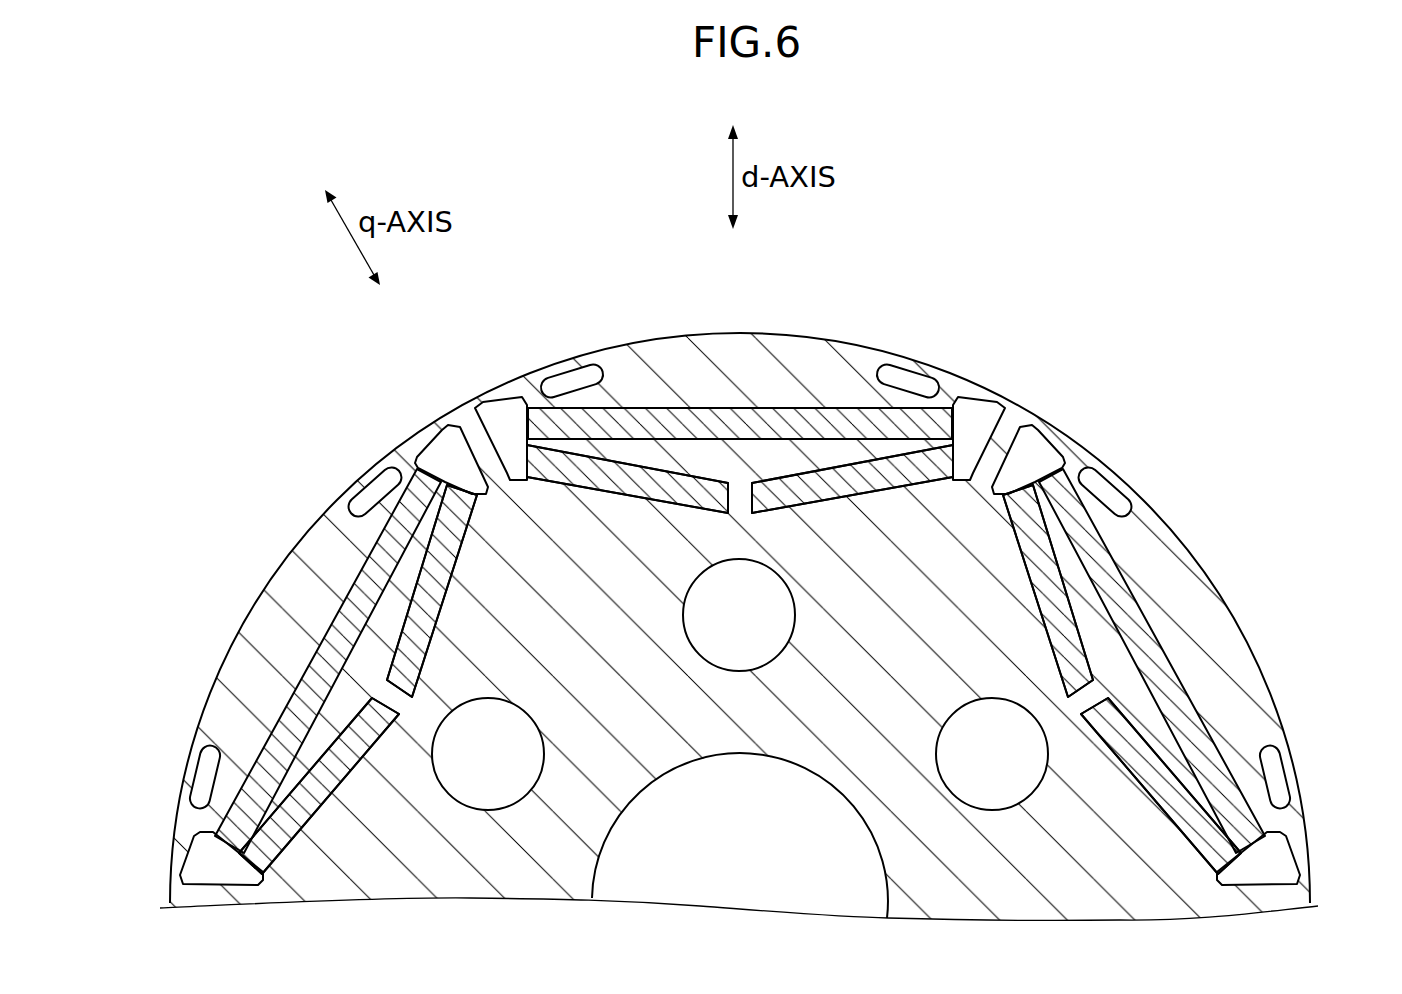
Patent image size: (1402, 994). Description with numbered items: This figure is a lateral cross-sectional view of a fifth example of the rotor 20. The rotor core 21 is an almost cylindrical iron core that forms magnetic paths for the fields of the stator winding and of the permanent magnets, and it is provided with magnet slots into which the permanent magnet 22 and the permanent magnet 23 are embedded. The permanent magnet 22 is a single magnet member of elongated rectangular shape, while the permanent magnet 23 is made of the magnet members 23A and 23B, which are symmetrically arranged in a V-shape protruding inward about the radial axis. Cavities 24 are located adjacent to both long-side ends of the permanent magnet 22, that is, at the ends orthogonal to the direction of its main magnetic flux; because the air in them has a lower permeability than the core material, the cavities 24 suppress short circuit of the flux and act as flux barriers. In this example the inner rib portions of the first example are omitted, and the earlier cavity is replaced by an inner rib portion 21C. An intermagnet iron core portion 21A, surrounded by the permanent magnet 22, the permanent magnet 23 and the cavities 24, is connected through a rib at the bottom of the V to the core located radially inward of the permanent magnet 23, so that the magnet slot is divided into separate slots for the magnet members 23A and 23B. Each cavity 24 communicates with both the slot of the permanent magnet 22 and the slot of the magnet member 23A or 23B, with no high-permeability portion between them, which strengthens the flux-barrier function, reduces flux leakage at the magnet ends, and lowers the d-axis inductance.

The rotor 20 is at (220, 142).
The rotor core 21 is at (858, 358).
The intermagnet iron core portion 21A is at (680, 467).
The inner rib portion 21C is at (743, 487).
The permanent magnet 22 is at (748, 412).
The permanent magnet 23 is at (848, 682).
The magnet member 23A is at (667, 492).
The magnet member 23B is at (830, 493).
The cavity 24 is at (445, 460).